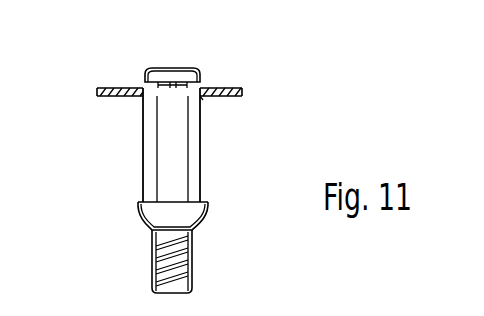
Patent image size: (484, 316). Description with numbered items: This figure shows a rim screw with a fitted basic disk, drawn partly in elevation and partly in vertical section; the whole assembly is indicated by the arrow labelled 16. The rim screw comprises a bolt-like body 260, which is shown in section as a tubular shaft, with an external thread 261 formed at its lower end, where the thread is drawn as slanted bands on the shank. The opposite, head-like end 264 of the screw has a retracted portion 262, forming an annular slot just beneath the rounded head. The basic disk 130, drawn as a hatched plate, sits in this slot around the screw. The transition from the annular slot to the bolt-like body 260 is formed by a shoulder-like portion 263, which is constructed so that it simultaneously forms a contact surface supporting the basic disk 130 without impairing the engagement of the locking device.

The fastener 16 is at (130, 158).
The basic disk 130 is at (222, 90).
The bolt-like body 260 is at (196, 164).
The external thread 261 is at (185, 260).
The retracted portion 262 is at (152, 88).
The shoulder-like portion 263 is at (203, 98).
The head-like end 264 is at (183, 73).